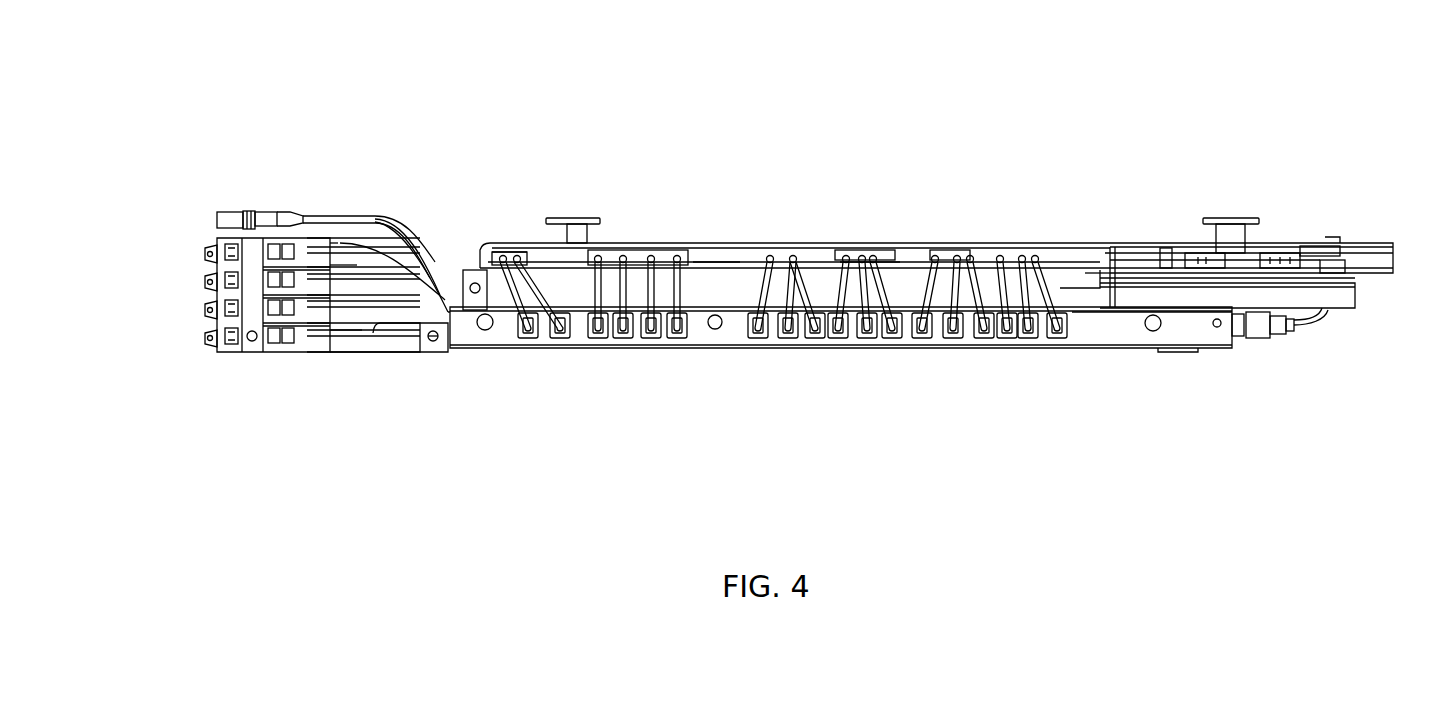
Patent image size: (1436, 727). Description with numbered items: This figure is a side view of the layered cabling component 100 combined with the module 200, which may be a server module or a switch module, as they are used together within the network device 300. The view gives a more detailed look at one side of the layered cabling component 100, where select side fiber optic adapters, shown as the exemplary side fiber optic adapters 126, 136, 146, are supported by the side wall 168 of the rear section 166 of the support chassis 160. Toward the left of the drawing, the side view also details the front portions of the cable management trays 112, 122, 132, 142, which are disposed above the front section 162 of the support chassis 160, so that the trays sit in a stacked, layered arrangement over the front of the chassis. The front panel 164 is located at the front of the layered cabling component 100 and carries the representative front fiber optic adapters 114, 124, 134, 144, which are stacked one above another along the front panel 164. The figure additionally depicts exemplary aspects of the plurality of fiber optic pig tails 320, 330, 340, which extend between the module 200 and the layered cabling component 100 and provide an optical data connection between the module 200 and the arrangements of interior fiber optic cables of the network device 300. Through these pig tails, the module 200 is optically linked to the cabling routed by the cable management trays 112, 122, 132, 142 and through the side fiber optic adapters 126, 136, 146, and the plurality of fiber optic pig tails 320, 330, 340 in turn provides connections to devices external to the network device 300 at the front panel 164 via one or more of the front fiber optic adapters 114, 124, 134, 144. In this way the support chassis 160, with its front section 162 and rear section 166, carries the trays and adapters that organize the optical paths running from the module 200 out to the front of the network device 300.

The layered cabling component 100 is at (558, 484).
The cable management tray 112 is at (515, 252).
The front fiber optic adapter 114 is at (203, 338).
The cable management tray 122 is at (362, 330).
The front fiber optic adapter 124 is at (203, 310).
The side fiber optic adapter 126 is at (985, 350).
The cable management tray 132 is at (357, 265).
The front fiber optic adapter 134 is at (203, 282).
The side fiber optic adapter 136 is at (822, 350).
The cable management tray 142 is at (338, 243).
The front fiber optic adapter 144 is at (203, 254).
The side fiber optic adapter 146 is at (667, 345).
The support chassis 160 is at (570, 359).
The front section 162 is at (385, 348).
The front panel 164 is at (242, 212).
The rear section 166 is at (1050, 350).
The side wall 168 is at (1115, 350).
The module 200 is at (912, 206).
The network device 300 is at (1047, 67).
The fiber optic pig tail 320 is at (1045, 268).
The fiber optic pig tail 330 is at (888, 243).
The fiber optic pig tail 340 is at (694, 248).